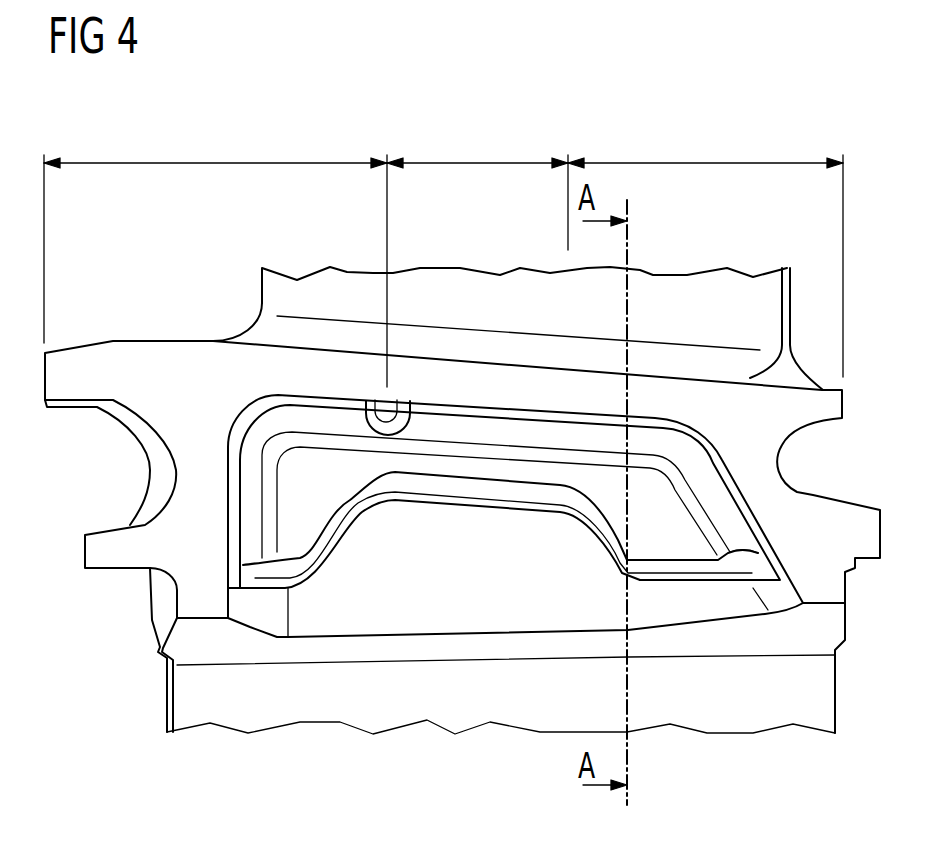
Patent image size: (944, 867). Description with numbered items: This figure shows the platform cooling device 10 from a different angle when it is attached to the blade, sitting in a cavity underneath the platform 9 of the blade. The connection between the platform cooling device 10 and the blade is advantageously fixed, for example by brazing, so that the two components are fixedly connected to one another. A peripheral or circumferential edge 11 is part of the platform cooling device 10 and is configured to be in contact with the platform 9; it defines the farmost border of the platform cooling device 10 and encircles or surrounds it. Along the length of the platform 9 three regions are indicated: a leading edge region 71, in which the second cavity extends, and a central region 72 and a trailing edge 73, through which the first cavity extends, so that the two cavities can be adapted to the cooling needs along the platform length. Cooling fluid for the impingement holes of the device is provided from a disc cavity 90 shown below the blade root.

The platform 9 is at (812, 405).
The seal/contour element in blade root slot 10 is at (310, 516).
The slot contour lines 11 is at (533, 497).
The first axial section 71 is at (215, 162).
The second axial section 72 is at (478, 162).
The third axial section 73 is at (705, 162).
The rotor disk 90 is at (130, 631).